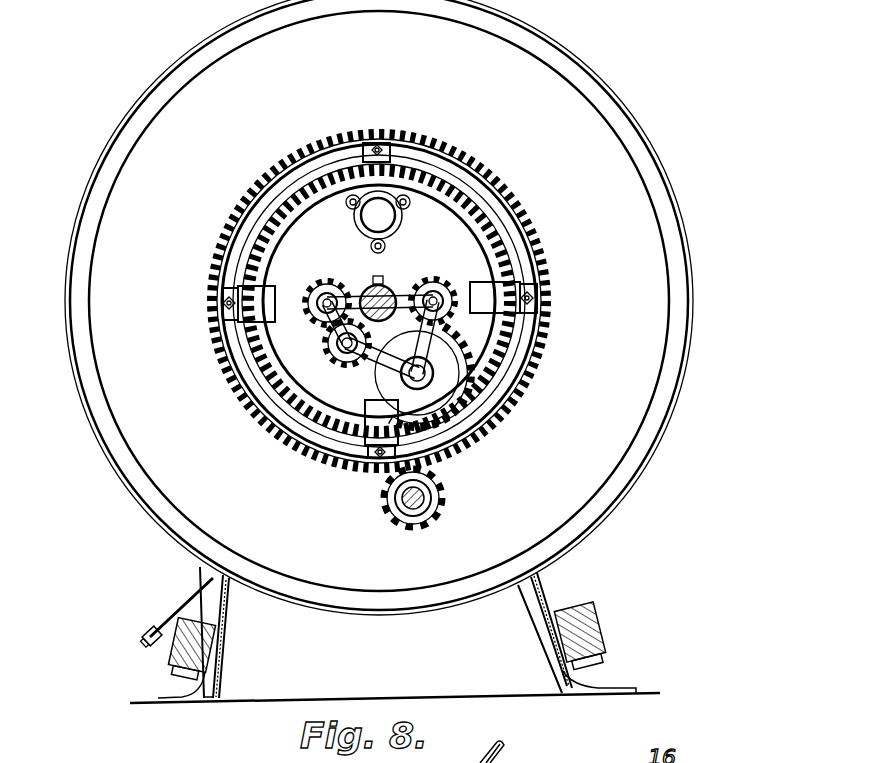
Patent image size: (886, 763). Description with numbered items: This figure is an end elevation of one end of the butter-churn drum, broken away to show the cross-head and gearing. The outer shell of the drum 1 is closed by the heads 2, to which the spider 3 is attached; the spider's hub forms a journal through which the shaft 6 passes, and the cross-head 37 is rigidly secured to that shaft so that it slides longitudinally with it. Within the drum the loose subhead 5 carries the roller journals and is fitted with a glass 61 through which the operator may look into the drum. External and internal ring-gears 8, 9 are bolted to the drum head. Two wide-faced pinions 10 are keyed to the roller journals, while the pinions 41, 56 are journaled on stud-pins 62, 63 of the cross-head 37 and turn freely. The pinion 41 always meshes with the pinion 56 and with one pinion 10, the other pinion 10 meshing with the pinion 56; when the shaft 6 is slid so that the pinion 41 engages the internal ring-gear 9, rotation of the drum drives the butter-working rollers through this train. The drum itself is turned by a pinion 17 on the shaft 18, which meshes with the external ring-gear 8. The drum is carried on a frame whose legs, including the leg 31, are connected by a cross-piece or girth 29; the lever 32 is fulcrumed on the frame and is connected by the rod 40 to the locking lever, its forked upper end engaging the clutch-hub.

The outer shell of the drum 1 is at (622, 128).
The heads of the drum 2 is at (379, 301).
The spider 3 is at (503, 298).
The loose subhead 5 is at (379, 301).
The shaft 6 is at (389, 292).
The external ring-gear 8 is at (541, 246).
The internal ring-gear 9 is at (497, 240).
The pinions 10 is at (470, 322).
The pinion 17 is at (438, 503).
The shaft 18 is at (404, 503).
The cross-piece or girth 29 is at (197, 657).
The leg 31 is at (232, 625).
The lever 32 is at (192, 597).
The cross-head 37 is at (349, 312).
The rod 40 is at (148, 648).
The pinion 41 is at (416, 374).
The pinion 56 is at (378, 335).
The glass 61 is at (378, 222).
The stud-pin 62 is at (366, 392).
The stud-pin 63 is at (358, 340).